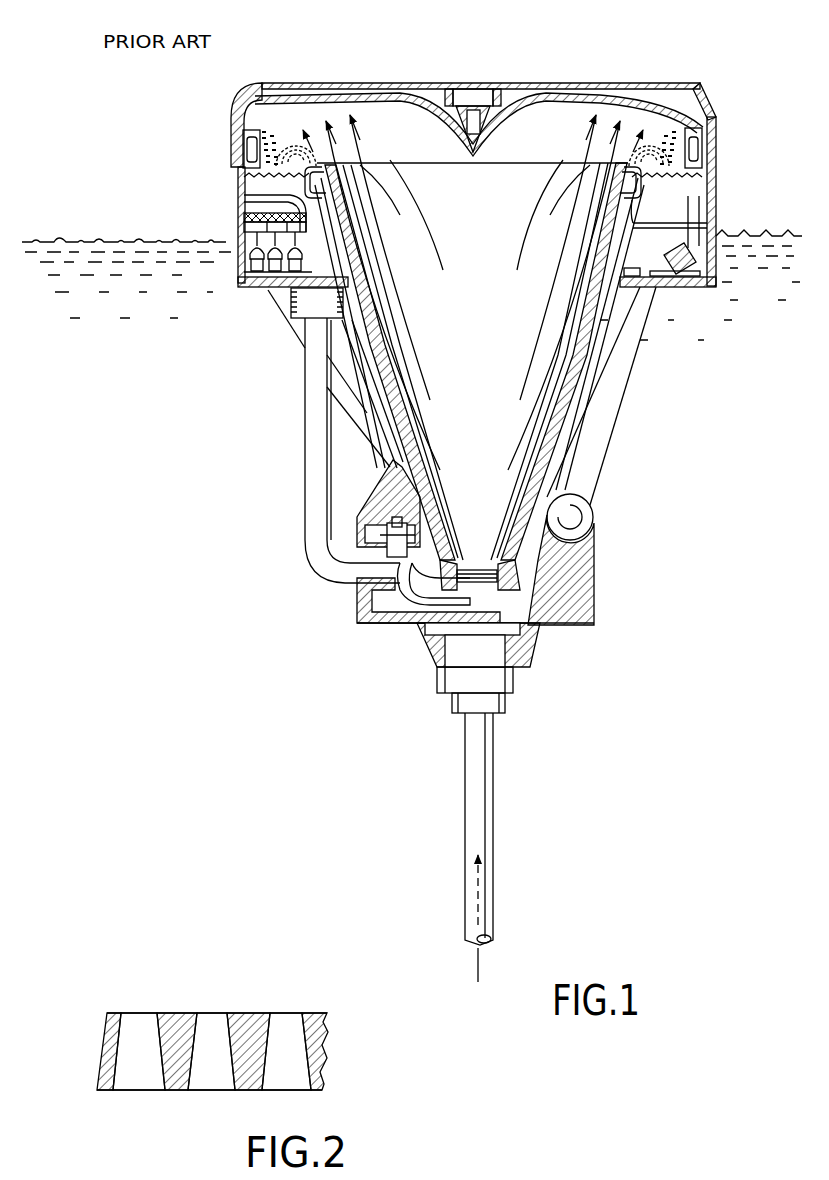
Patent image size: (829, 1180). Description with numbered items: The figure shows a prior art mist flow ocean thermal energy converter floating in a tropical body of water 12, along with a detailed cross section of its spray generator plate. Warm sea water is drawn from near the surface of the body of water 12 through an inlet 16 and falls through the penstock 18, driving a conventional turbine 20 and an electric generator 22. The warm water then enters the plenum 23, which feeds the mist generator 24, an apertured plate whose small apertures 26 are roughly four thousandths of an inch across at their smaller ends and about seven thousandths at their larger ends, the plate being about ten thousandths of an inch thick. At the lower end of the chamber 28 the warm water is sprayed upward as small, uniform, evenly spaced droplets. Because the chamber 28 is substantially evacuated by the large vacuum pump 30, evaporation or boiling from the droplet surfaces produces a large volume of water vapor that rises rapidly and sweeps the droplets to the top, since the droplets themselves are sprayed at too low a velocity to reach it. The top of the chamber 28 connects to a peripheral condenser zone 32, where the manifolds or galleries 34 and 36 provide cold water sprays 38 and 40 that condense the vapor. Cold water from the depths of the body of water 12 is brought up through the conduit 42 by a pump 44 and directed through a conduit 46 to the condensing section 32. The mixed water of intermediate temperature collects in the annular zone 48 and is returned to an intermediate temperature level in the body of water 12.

In FIG. 1, the body of water 12 is at (412, 285).
In FIG. 1, the inlet 16 is at (297, 307).
In FIG. 1, the penstock 18 is at (318, 448).
In FIG. 1, the turbine 20 is at (383, 572).
In FIG. 1, the electric generator 22 is at (397, 535).
In FIG. 1, the plenum 23 is at (475, 598).
In FIG. 1, the mist generator 24 is at (480, 569).
In FIG. 2, the mist generator 24 is at (255, 1080).
In FIG. 2, the apertures 26 is at (292, 1025).
In FIG. 1, the chamber 28 is at (473, 337).
In FIG. 1, the vacuum pump 30 is at (464, 92).
In FIG. 1, the peripheral condenser zone 32 is at (272, 122).
In FIG. 1, the manifold 34 is at (702, 153).
In FIG. 1, the manifold 36 is at (650, 187).
In FIG. 1, the cold water spray 38 is at (673, 130).
In FIG. 1, the cold water spray 40 is at (288, 150).
In FIG. 1, the conduit 42 is at (478, 797).
In FIG. 1, the pump 44 is at (500, 675).
In FIG. 1, the conduit 46 is at (625, 355).
In FIG. 1, the annular zone 48 is at (646, 180).